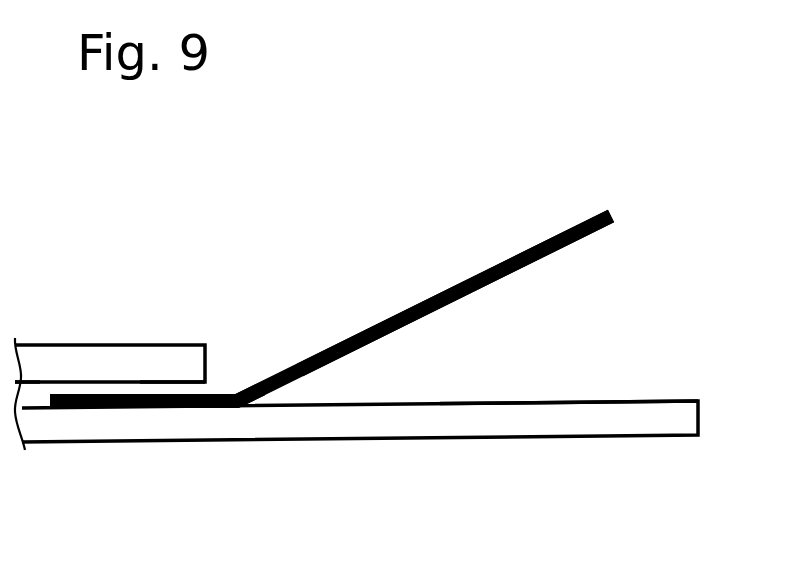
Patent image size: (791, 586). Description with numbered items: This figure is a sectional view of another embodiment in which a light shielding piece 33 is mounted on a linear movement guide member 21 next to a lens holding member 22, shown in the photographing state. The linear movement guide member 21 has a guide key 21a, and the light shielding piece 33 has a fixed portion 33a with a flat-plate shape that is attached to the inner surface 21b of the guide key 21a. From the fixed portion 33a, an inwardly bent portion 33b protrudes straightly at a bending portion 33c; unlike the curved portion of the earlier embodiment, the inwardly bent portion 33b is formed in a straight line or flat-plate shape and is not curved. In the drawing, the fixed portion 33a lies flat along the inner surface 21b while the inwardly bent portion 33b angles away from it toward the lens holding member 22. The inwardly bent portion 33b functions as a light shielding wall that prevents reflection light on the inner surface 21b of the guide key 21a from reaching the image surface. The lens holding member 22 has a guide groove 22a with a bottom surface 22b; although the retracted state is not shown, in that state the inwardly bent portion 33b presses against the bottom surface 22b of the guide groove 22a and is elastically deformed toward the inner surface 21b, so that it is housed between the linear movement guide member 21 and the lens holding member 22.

The linear movement guide member 21 is at (360, 457).
The guide key 21a is at (620, 420).
The inner surface 21b is at (504, 403).
The lens holding member 22 is at (117, 362).
The guide groove 22a is at (37, 392).
The bottom surface 22b is at (164, 380).
The light shielding piece 33 is at (310, 348).
The fixed portion 33a is at (43, 406).
The inwardly bent portion 33b is at (530, 263).
The bending portion 33c is at (230, 392).